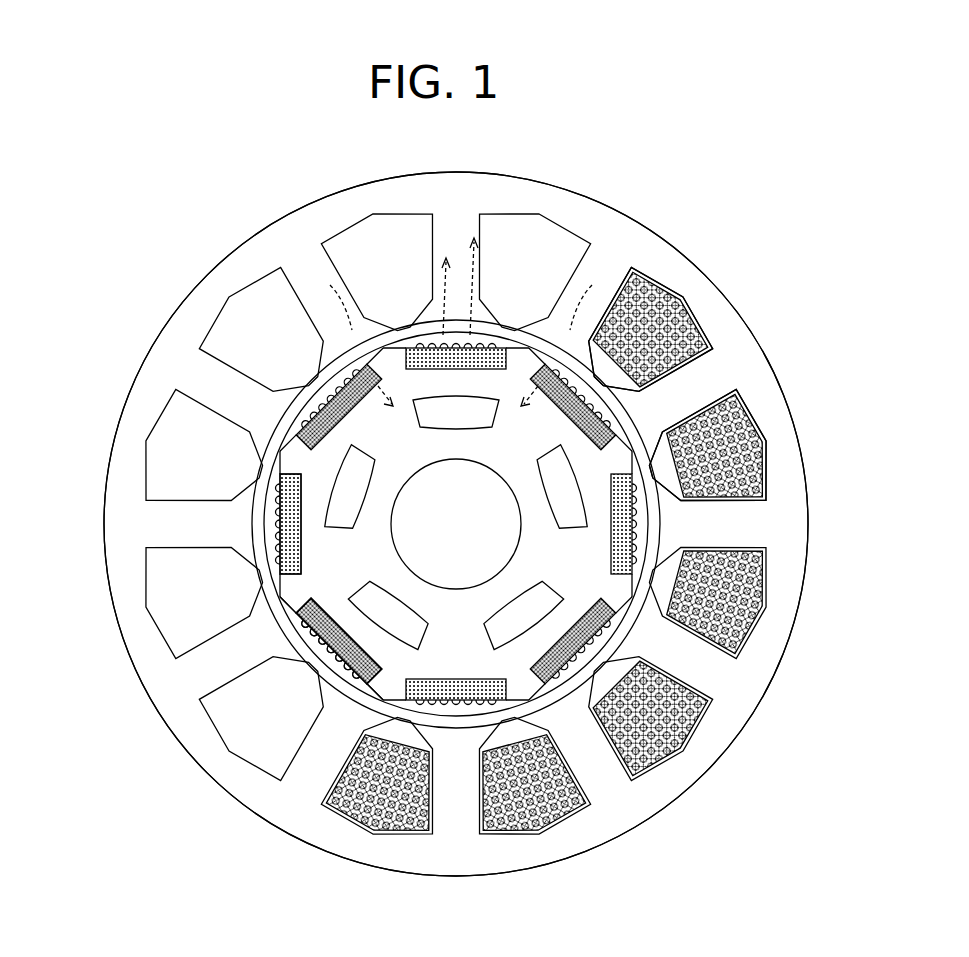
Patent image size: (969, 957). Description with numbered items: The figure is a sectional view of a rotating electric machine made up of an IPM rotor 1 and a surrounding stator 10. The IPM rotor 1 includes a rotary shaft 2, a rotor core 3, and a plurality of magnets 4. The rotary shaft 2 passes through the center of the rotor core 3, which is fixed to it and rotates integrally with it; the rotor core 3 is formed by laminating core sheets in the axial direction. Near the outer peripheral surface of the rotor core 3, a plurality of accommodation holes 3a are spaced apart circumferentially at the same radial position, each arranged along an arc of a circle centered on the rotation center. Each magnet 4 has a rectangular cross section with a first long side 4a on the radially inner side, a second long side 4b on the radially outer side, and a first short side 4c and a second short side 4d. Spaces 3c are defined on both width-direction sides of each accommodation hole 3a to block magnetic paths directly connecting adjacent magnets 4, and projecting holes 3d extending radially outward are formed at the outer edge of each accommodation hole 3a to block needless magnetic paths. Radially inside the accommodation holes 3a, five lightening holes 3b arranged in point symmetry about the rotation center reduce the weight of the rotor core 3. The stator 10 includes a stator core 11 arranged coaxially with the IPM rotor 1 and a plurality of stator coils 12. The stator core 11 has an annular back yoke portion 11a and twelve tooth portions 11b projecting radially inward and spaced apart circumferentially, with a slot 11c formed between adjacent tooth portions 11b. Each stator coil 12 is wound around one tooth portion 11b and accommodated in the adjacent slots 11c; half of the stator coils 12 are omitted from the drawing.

The IPM rotor 1 is at (272, 452).
The rotary shaft 2 is at (325, 518).
The rotor core 3 is at (300, 418).
The accommodation holes 3a is at (262, 480).
The lightening holes 3b is at (398, 551).
The spaces 3c is at (275, 508).
The projecting holes 3d is at (327, 340).
The magnets 4 is at (292, 432).
The first long side 4a is at (365, 692).
The second long side 4b is at (330, 655).
The first short side 4c is at (335, 615).
The second short side 4d is at (390, 708).
The stator 10 is at (723, 277).
The stator core 11 is at (750, 323).
The back yoke portion 11a is at (785, 437).
The tooth portions 11b is at (655, 413).
The slot 11c is at (713, 520).
The stator coils 12 is at (765, 560).